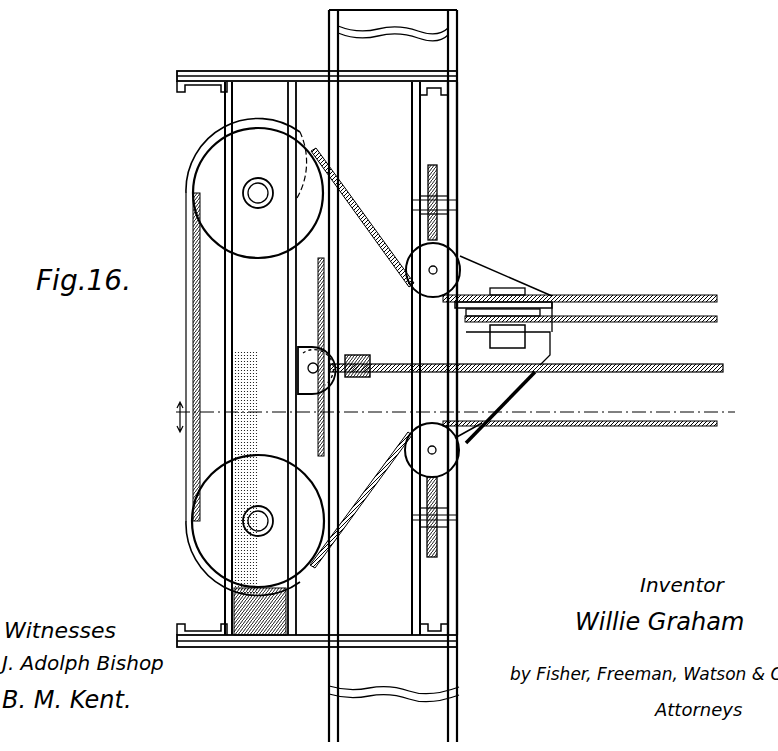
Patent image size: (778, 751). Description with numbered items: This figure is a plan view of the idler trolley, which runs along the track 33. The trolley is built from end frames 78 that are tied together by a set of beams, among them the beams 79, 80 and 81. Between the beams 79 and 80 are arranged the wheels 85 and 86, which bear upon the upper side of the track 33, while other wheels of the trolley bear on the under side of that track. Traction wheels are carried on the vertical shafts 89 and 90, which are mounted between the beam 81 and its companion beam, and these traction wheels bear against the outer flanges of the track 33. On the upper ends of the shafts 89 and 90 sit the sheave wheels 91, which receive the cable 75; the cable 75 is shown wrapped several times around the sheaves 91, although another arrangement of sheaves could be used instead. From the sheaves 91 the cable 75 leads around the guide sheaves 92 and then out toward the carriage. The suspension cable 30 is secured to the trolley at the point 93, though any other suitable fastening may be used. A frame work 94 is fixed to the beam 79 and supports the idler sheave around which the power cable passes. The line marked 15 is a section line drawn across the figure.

The section line 15 is at (443, 417).
The suspension cable 30 is at (702, 364).
The track 33 is at (457, 45).
The cable 75 is at (193, 351).
The end frames 78 is at (306, 62).
The beam 79 is at (457, 100).
The beam 80 is at (412, 114).
The beam 81 is at (225, 108).
The wheel 85 is at (438, 181).
The wheel 86 is at (438, 549).
The vertical shaft 89 is at (260, 206).
The vertical shaft 90 is at (261, 533).
The sheave wheels 91 is at (200, 150).
The guide sheaves 92 is at (415, 258).
The securing point of suspension cable 93 is at (318, 347).
The frame work 94 is at (528, 382).